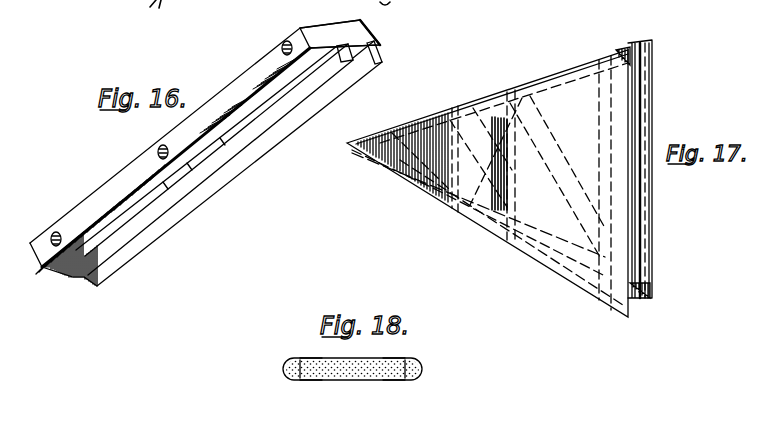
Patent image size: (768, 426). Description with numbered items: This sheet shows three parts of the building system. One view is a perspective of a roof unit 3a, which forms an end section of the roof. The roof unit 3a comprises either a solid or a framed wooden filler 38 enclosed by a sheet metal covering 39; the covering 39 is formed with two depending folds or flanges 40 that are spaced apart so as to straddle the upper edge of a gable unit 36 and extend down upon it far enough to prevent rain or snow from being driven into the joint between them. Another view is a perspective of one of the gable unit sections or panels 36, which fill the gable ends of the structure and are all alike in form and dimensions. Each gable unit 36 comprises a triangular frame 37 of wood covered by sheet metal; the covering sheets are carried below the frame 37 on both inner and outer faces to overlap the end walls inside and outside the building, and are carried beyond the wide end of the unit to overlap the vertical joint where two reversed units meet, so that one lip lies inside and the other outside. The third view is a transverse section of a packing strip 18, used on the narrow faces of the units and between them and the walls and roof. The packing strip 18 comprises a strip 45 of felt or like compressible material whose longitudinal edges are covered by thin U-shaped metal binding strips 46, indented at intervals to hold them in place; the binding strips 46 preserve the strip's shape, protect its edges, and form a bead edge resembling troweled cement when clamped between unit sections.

In FIG. 16, the sheet metal covering 39 is at (201, 110).
In FIG. 16, the roof unit 3a is at (82, 208).
In FIG. 16, the depending folds or flanges 40 is at (289, 125).
In FIG. 16, the wooden filler 38 is at (352, 36).
In FIG. 17, the gable unit section or panel 36 is at (499, 178).
In FIG. 17, the triangular frame 37 is at (519, 210).
In FIG. 18, the packing strip 18 is at (352, 382).
In FIG. 18, the strip of felt or like compressible material 45 is at (346, 378).
In FIG. 18, the U-shaped metal binding strips 46 is at (296, 380).